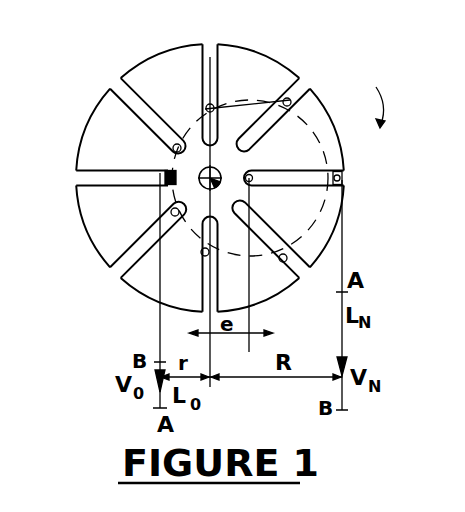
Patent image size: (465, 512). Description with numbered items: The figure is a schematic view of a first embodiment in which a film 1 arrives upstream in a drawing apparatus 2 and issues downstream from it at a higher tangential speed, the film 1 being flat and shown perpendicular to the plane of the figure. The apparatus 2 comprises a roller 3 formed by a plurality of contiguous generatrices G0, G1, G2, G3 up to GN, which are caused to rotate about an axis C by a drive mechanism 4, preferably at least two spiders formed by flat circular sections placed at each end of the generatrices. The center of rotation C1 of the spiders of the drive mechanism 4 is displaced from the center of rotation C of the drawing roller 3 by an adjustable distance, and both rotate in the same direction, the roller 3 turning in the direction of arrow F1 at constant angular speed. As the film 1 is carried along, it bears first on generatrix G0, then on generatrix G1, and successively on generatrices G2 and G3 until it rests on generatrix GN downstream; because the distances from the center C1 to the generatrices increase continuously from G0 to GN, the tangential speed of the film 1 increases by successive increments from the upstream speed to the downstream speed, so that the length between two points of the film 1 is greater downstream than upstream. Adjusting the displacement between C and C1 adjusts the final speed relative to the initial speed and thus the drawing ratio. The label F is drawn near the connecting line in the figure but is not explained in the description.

The film 1 is at (158, 341).
The drawing apparatus 2 is at (253, 49).
The roller 3 is at (255, 98).
The drive mechanism 4 is at (96, 142).
The generatrix G0 is at (165, 170).
The generatrix G1 is at (177, 144).
The generatrix G2 is at (207, 105).
The generatrix G3 is at (290, 100).
The generatrix GN is at (342, 180).
The axis of rotation C is at (250, 226).
The center of rotation C1 is at (203, 180).
The force F is at (243, 121).
The arrow F1 is at (359, 107).